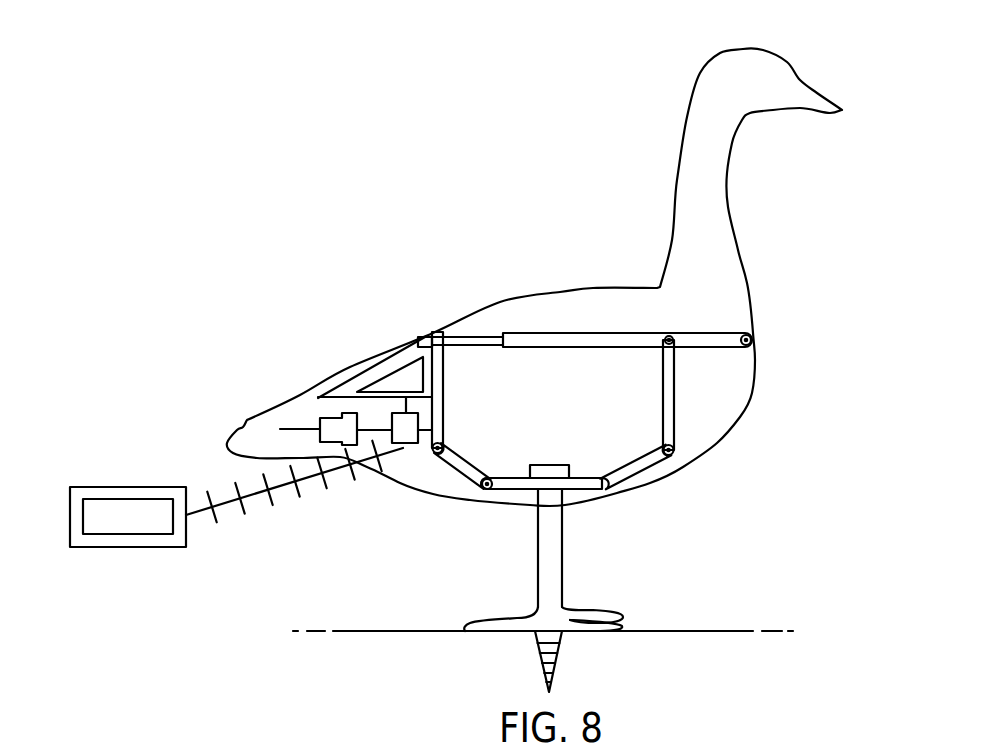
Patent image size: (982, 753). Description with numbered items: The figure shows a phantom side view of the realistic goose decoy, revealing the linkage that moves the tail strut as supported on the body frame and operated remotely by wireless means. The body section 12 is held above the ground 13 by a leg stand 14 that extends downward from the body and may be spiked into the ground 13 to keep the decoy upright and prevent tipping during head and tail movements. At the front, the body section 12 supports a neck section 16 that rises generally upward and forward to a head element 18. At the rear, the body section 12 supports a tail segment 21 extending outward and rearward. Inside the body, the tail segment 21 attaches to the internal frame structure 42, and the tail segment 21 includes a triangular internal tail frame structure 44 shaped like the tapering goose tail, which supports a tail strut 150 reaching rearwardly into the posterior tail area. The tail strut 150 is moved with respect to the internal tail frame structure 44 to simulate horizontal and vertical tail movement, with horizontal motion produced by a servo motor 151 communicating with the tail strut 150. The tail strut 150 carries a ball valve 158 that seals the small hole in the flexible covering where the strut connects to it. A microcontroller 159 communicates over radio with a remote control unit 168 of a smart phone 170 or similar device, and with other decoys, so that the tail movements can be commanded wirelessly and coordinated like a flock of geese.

The body section 12 is at (575, 278).
The ground 13 is at (695, 648).
The leg stand 14 is at (538, 568).
The neck section 16 is at (750, 200).
The head element 18 is at (792, 40).
The tail segment 21 is at (352, 342).
The internal frame structure 42 is at (692, 401).
The internal tail frame structure 44 is at (403, 363).
The tail strut 150 is at (300, 429).
The servo motor 151 is at (152, 738).
The ball valve 158 is at (333, 424).
The microcontroller 159 is at (408, 443).
The remote control unit 168 is at (127, 534).
The smart phone 170 is at (127, 487).